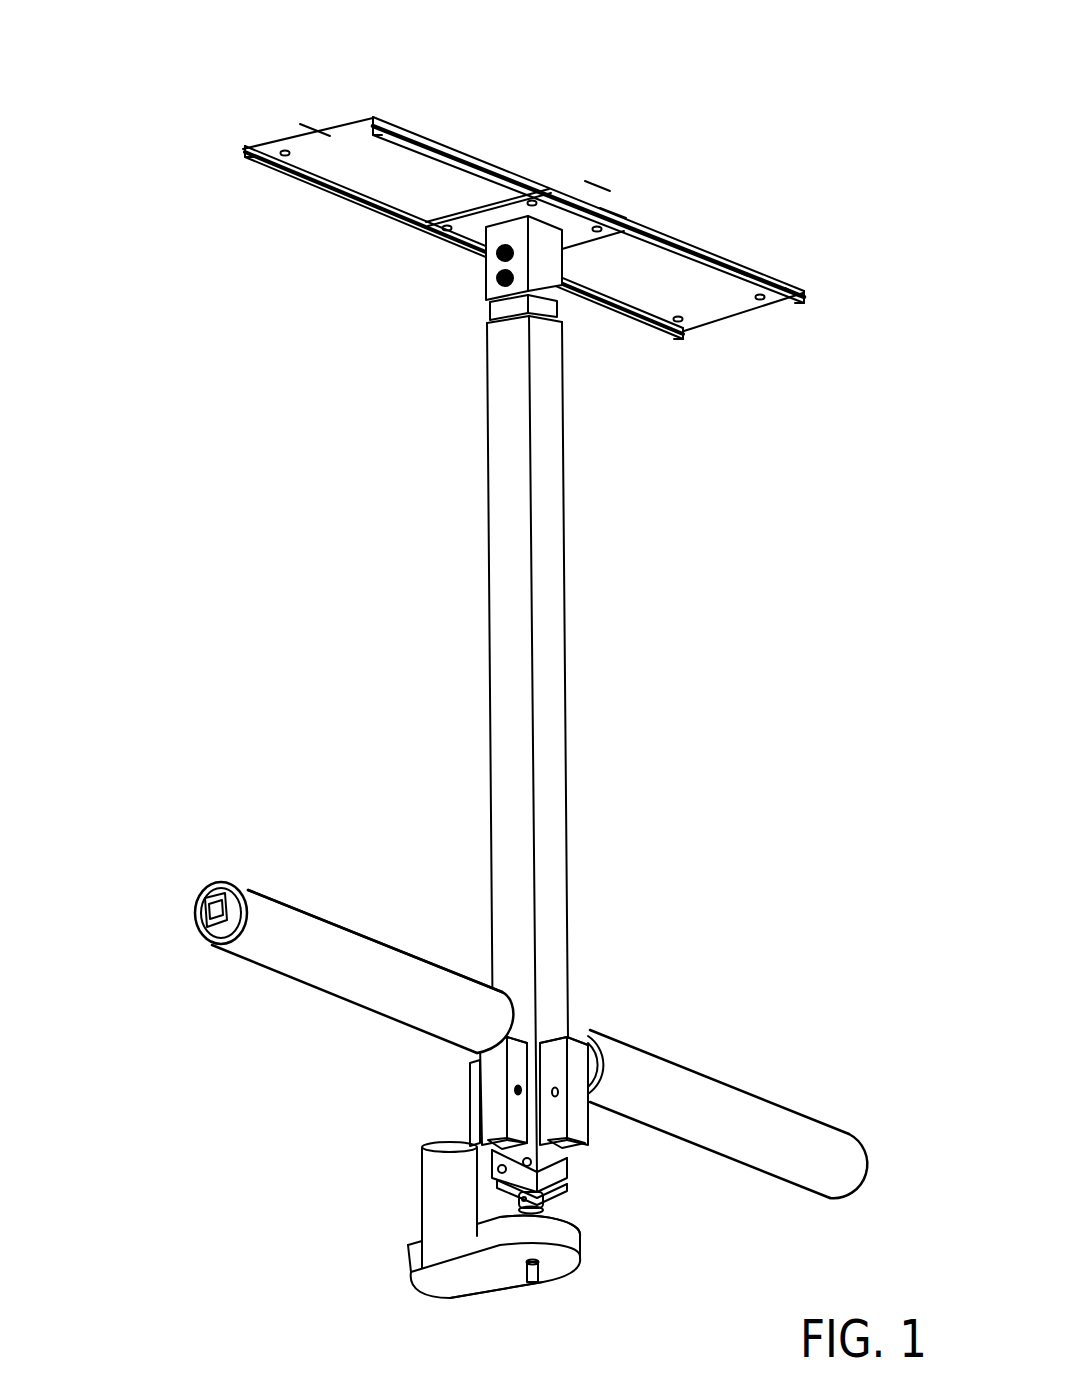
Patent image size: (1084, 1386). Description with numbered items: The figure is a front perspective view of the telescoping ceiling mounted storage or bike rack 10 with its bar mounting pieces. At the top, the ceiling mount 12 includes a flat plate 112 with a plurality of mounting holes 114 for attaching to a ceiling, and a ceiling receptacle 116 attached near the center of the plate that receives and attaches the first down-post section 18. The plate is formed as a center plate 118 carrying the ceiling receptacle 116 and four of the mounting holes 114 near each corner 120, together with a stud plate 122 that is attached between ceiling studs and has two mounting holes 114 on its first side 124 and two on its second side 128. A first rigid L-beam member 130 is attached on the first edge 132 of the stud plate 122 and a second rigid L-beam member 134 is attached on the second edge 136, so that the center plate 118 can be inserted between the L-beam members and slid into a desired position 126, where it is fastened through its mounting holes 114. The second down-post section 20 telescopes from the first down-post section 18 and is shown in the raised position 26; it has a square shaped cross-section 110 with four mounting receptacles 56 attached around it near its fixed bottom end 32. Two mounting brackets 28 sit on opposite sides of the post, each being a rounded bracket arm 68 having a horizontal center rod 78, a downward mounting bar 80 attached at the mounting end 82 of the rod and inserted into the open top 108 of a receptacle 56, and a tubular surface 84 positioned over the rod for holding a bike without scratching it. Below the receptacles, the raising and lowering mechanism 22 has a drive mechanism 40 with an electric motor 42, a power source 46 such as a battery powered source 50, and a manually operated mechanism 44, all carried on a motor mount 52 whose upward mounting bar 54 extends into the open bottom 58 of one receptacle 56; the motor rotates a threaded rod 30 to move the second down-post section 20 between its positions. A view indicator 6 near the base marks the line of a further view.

The section line 6 is at (308, 1305).
The telescoping ceiling mounted storage rack 10 is at (123, 507).
The ceiling mount 12 is at (164, 166).
The first down-post section 18 is at (493, 313).
The second down-post section 20 is at (505, 490).
The raising and lowering mechanism 22 is at (672, 1248).
The raised position 26 is at (201, 1066).
The mounting bracket 28 is at (843, 1077).
The threaded rod 30 is at (560, 1218).
The bottom end 32 is at (547, 1207).
The drive mechanism 40 is at (400, 1204).
The electric motor 42 is at (427, 1155).
The manually operated mechanism 44 is at (560, 1306).
The power source 46 is at (443, 1283).
The battery powered source 50 is at (540, 1237).
The motor mount 52 is at (478, 1280).
The upward mounting bar 54 is at (490, 1195).
The mounting receptacle 56 is at (580, 1062).
The open bottom 58 is at (470, 1165).
The rounded bracket arm 68 is at (519, 1000).
The horizontal center rod 78 is at (205, 915).
The downward mounting bar 80 is at (576, 1016).
The mounting end 82 is at (495, 963).
The tubular surface 84 is at (303, 910).
The open top 108 is at (585, 1040).
The square shaped cross-section 110 is at (523, 745).
The flat plate 112 is at (606, 152).
The mounting holes 114 is at (285, 151).
The ceiling receptacle 116 is at (487, 263).
The center plate 118 is at (556, 208).
The corner 120 is at (371, 252).
The stud plate 122 is at (397, 150).
The first side 124 is at (293, 111).
The desired position 126 is at (629, 182).
The second side 128 is at (752, 336).
The first rigid L-beam member 130 is at (797, 283).
The first edge 132 is at (735, 268).
The second rigid L-beam member 134 is at (665, 338).
The second edge 136 is at (312, 223).